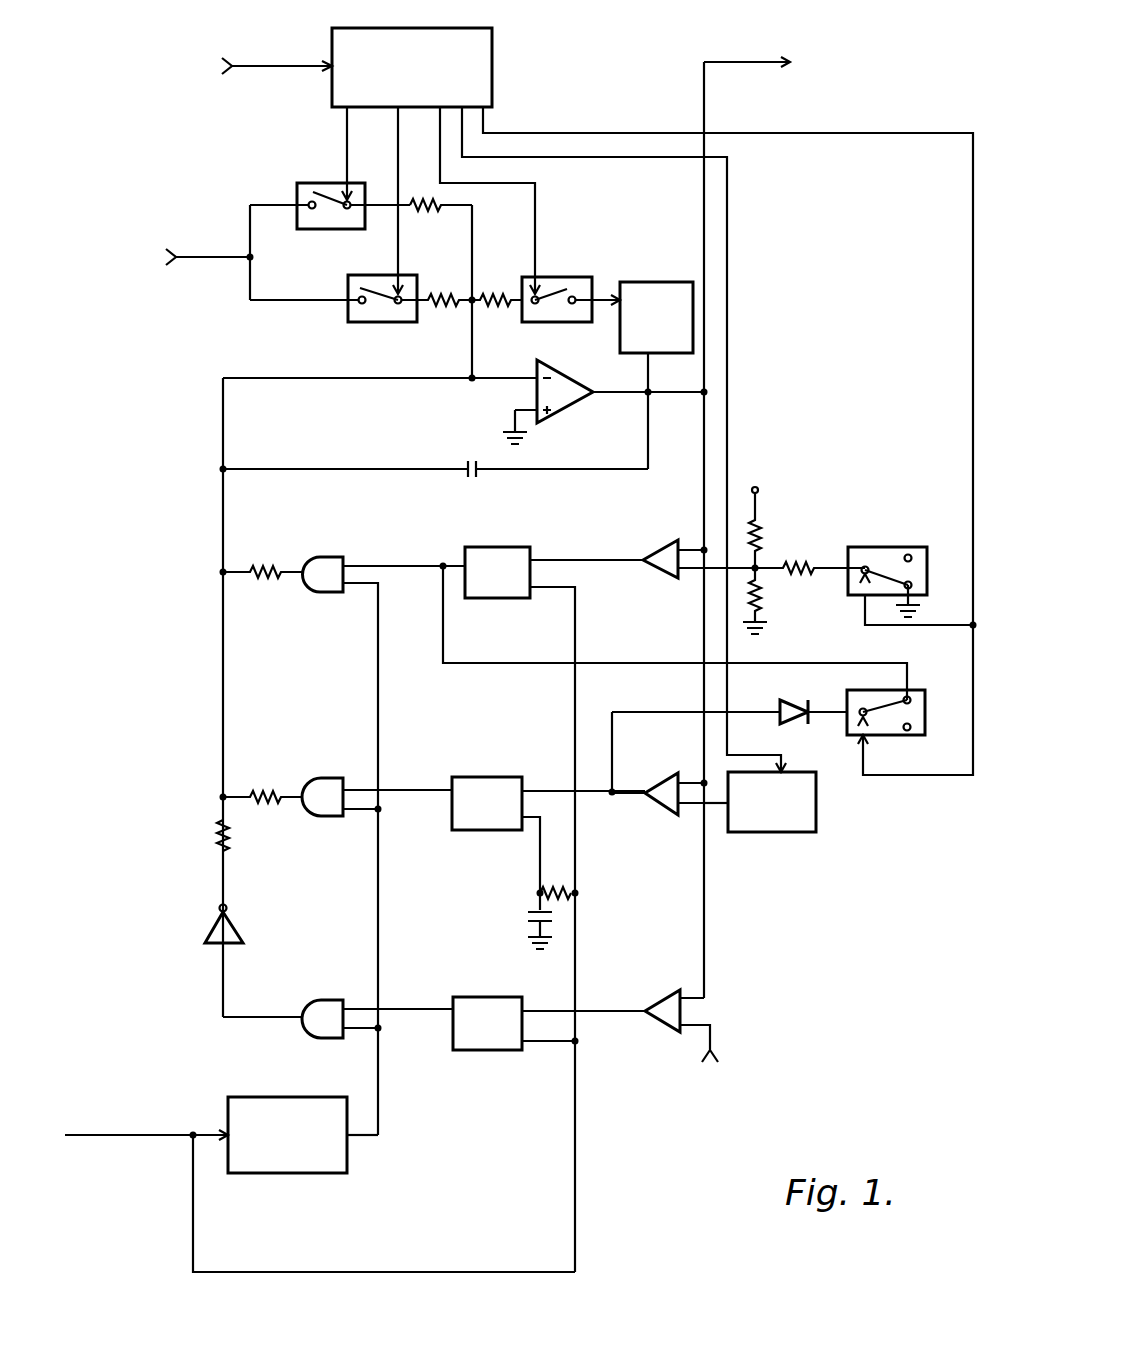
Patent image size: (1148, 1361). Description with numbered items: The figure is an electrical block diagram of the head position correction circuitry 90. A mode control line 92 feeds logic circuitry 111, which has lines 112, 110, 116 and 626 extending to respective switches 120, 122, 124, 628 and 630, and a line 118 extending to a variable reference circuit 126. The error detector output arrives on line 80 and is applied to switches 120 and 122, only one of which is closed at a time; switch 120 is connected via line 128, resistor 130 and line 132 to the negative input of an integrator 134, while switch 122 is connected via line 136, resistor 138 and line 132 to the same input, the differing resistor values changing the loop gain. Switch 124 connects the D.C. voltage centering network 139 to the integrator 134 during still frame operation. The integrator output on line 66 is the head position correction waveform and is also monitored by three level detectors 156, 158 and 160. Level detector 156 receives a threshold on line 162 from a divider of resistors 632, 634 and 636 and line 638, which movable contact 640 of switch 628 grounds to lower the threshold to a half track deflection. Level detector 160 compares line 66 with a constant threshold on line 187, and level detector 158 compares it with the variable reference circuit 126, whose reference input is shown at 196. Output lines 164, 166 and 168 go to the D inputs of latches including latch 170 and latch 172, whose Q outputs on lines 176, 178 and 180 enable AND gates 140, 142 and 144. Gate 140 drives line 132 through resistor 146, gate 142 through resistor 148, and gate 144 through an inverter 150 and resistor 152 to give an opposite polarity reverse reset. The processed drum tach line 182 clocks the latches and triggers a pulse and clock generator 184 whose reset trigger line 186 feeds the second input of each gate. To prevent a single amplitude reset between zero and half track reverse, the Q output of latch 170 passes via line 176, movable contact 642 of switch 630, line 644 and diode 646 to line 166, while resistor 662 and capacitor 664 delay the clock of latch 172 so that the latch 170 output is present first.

The mode control line 92 is at (270, 66).
The logic circuitry 111 is at (492, 36).
The line 112 is at (345, 118).
The logic control line 110 is at (398, 149).
The line 116 is at (440, 131).
The line 118 is at (465, 122).
The line 626 is at (641, 133).
The switch 120 is at (297, 185).
The line 80 is at (207, 262).
The line 128 is at (381, 214).
The resistor 130 is at (436, 213).
The line 132 is at (473, 266).
The switch 122 is at (362, 324).
The resistor 138 is at (447, 308).
The line 136 is at (425, 293).
The switch 124 is at (563, 277).
The D.C. voltage centering network 139 is at (657, 282).
The integrator 134 is at (563, 421).
The output line 66 is at (738, 58).
The resistor 632 is at (762, 530).
The resistor 634 is at (768, 598).
The resistor 636 is at (798, 563).
The line 638 is at (838, 566).
The switch 628 is at (888, 547).
The movable contact 640 is at (898, 572).
The level detector 156 is at (668, 542).
The line 162 is at (686, 578).
The output line 164 is at (571, 558).
The latch 170 is at (512, 598).
The line 176 is at (420, 562).
The AND gate 140 is at (330, 557).
The resistor 146 is at (268, 583).
The AND gate 142 is at (333, 778).
The resistor 148 is at (262, 788).
The line 178 is at (420, 788).
The latch 172 is at (452, 832).
The output line 166 is at (620, 790).
The resistor 662 is at (548, 888).
The capacitor 664 is at (532, 913).
The level detector 158 is at (668, 816).
The variable reference circuit 126 is at (818, 829).
The reference input line 196 is at (717, 807).
The line 644 is at (828, 716).
The diode 646 is at (780, 719).
The switch 630 is at (921, 736).
The movable contact 642 is at (905, 710).
The resistor 152 is at (218, 841).
The inverter 150 is at (207, 933).
The circuitry 90 is at (196, 710).
The AND gate 144 is at (334, 1000).
The line 180 is at (420, 1007).
The output line 168 is at (622, 1008).
The level detector 160 is at (676, 1033).
The line 187 is at (712, 1038).
The line 182 is at (205, 1132).
The pulse and clock generator circuit 184 is at (347, 1175).
The output line 186 is at (380, 1137).